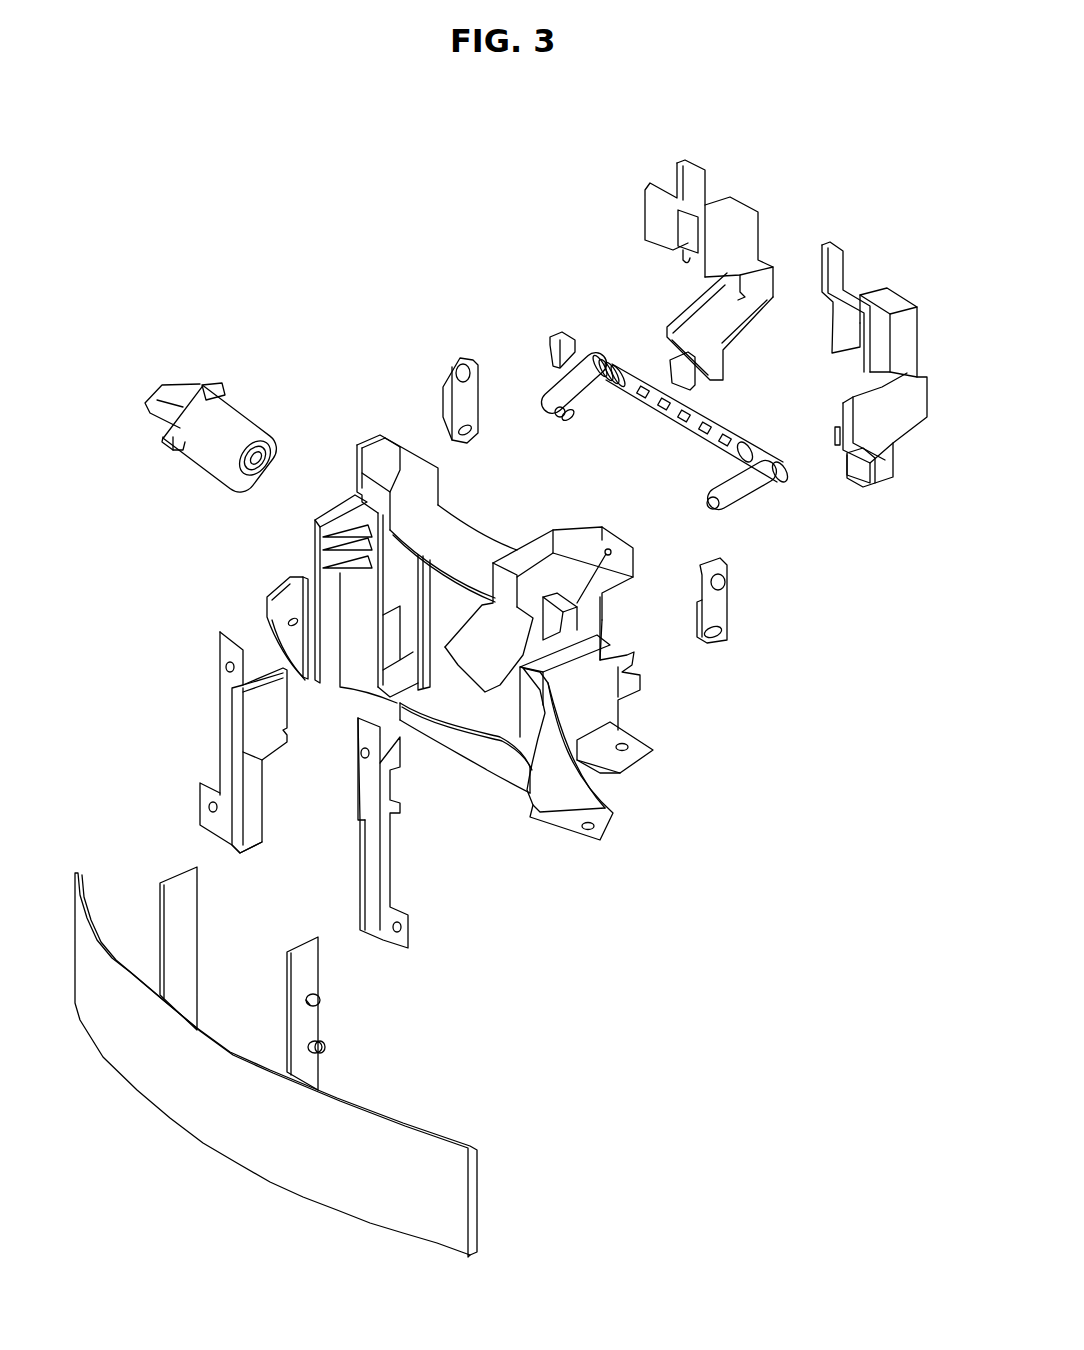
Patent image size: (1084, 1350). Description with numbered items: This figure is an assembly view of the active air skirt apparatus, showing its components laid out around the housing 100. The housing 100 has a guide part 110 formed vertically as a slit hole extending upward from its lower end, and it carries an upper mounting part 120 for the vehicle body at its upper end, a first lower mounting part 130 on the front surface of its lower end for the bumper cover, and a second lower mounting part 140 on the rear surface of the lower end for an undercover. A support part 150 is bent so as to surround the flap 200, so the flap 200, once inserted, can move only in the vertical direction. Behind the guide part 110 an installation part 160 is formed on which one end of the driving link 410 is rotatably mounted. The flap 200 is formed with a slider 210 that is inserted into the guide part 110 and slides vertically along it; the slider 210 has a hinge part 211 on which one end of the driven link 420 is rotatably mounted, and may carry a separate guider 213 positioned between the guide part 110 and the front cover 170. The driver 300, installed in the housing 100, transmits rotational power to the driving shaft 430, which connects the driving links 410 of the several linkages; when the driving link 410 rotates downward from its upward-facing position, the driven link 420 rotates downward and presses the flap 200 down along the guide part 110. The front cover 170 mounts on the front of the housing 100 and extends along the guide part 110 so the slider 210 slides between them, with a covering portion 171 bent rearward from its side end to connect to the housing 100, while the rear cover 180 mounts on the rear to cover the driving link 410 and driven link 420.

The housing 100 is at (357, 432).
The guide part 110 is at (420, 612).
The upper mounting part 120 is at (605, 550).
The first lower mounting part 130 is at (587, 833).
The second lower mounting part 140 is at (447, 648).
The support part 150 is at (322, 604).
The installation part 160 is at (628, 662).
The front cover 170 is at (385, 853).
The covering portion 171 is at (257, 733).
The rear cover 180 is at (750, 240).
The flap 200 is at (183, 1093).
The slider 210 is at (312, 967).
The hinge part 211 is at (323, 1057).
The guider 213 is at (320, 1003).
The driver 300 is at (200, 423).
The driving link 410 is at (557, 393).
The driven link 420 is at (445, 385).
The driving shaft 430 is at (637, 363).